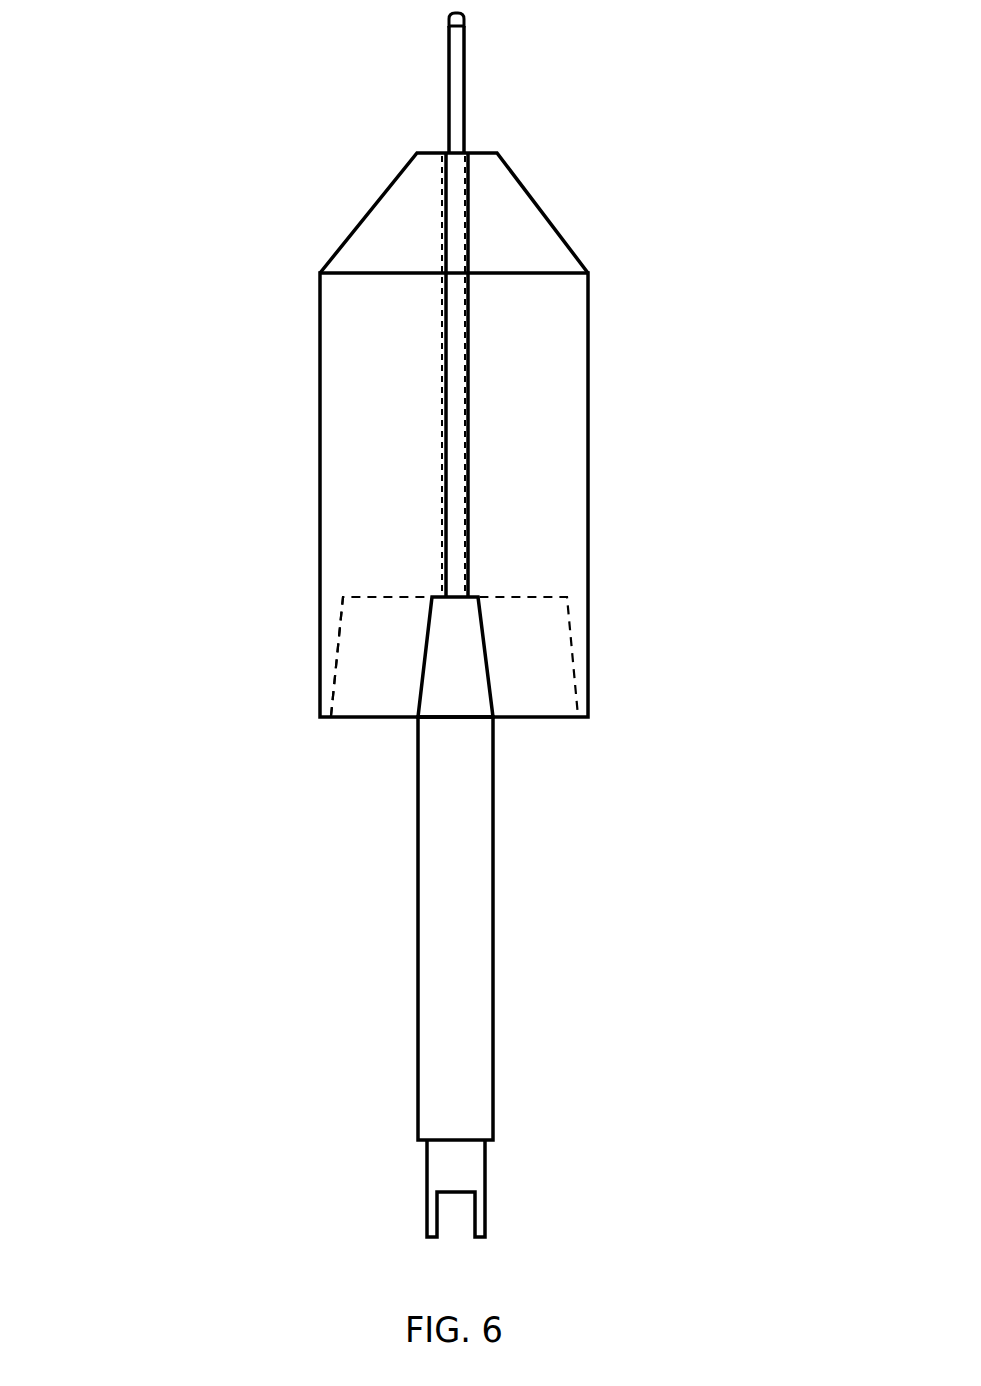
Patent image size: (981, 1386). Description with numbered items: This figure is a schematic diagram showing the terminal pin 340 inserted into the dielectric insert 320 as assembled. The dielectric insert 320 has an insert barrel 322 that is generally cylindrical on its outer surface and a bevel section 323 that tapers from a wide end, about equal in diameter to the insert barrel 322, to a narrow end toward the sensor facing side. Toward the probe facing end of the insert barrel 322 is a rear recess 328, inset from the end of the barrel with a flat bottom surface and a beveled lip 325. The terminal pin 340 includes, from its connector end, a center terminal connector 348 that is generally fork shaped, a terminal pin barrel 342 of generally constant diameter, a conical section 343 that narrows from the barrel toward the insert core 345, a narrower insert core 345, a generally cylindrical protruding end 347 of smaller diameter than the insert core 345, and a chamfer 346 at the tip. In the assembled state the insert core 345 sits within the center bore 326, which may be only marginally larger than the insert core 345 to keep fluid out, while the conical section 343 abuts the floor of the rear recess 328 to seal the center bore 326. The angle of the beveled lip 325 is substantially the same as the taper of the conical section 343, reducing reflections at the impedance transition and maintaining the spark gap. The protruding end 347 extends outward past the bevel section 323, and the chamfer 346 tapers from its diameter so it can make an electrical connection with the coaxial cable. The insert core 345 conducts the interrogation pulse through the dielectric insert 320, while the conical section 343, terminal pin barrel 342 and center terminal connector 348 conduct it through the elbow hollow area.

The dielectric insert 320 is at (158, 429).
The insert barrel 322 is at (570, 484).
The bevel section 323 is at (525, 233).
The beveled lip 325 is at (578, 645).
The center bore 326 is at (470, 408).
The rear recess 328 is at (337, 667).
The terminal pin 340 is at (562, 915).
The terminal pin barrel 342 is at (418, 915).
The conical section 343 is at (422, 668).
The insert core 345 is at (447, 298).
The chamfer 346 is at (449, 18).
The protruding end 347 is at (449, 88).
The center terminal connector 348 is at (427, 1170).